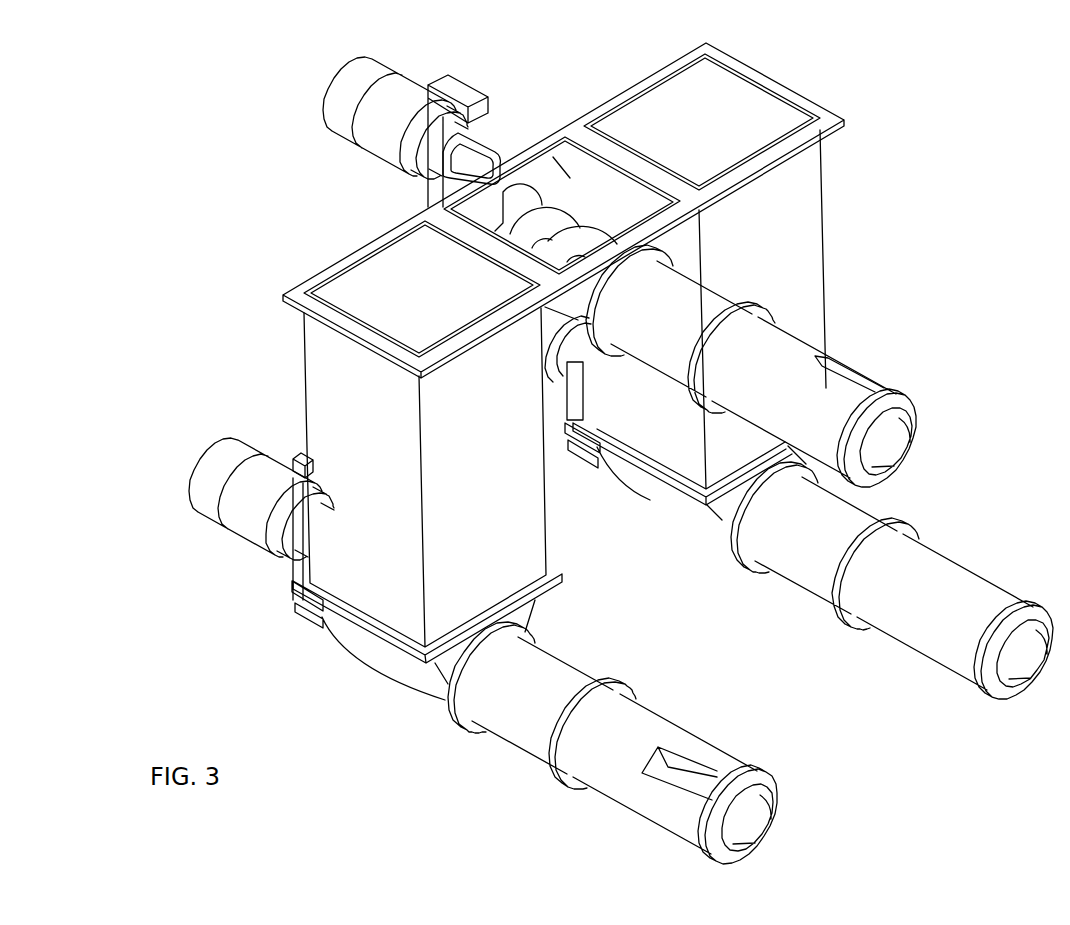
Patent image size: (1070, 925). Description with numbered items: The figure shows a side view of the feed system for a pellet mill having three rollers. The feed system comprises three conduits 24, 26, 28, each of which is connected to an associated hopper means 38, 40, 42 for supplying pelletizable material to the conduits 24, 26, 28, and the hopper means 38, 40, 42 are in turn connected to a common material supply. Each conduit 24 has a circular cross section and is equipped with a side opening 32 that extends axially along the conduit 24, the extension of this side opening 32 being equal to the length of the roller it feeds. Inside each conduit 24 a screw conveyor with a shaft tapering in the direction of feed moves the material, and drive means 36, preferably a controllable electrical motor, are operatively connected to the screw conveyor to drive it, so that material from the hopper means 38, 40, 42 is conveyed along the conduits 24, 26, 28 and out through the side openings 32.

The conduit 24 is at (783, 348).
The conduit 26 is at (920, 555).
The conduit 28 is at (530, 725).
The side opening 32 is at (860, 372).
The drive means 36 is at (380, 103).
The hopper means 38 is at (547, 205).
The hopper means 40 is at (742, 108).
The hopper means 42 is at (370, 293).